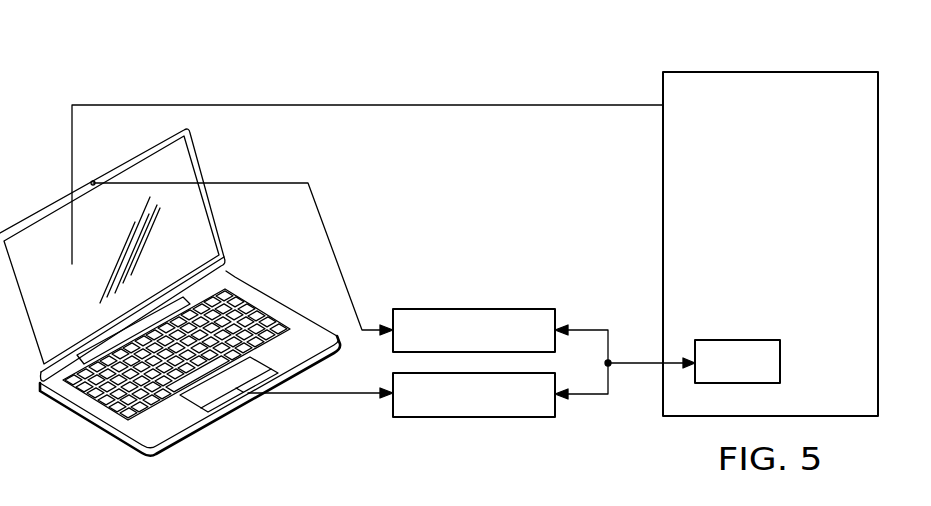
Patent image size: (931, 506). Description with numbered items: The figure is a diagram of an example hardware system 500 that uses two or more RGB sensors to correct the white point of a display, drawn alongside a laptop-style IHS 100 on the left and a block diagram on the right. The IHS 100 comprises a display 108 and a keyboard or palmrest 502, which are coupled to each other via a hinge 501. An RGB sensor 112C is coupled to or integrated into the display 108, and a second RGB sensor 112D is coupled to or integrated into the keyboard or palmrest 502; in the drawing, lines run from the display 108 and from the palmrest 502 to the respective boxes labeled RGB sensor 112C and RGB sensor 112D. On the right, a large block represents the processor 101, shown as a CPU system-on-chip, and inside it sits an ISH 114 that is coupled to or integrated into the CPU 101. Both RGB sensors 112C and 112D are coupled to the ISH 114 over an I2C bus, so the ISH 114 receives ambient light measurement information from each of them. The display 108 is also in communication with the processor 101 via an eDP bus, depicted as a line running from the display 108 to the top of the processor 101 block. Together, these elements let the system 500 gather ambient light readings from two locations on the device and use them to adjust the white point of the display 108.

The hardware system 500 is at (173, 45).
The IHS 100 is at (96, 440).
The display 108 is at (50, 222).
The hinge 501 is at (200, 287).
The keyboard or palmrest 502 is at (188, 433).
The RGB sensor 112C is at (473, 308).
The RGB sensor 112D is at (473, 417).
The processor 101 is at (770, 70).
The ISH 114 is at (780, 374).